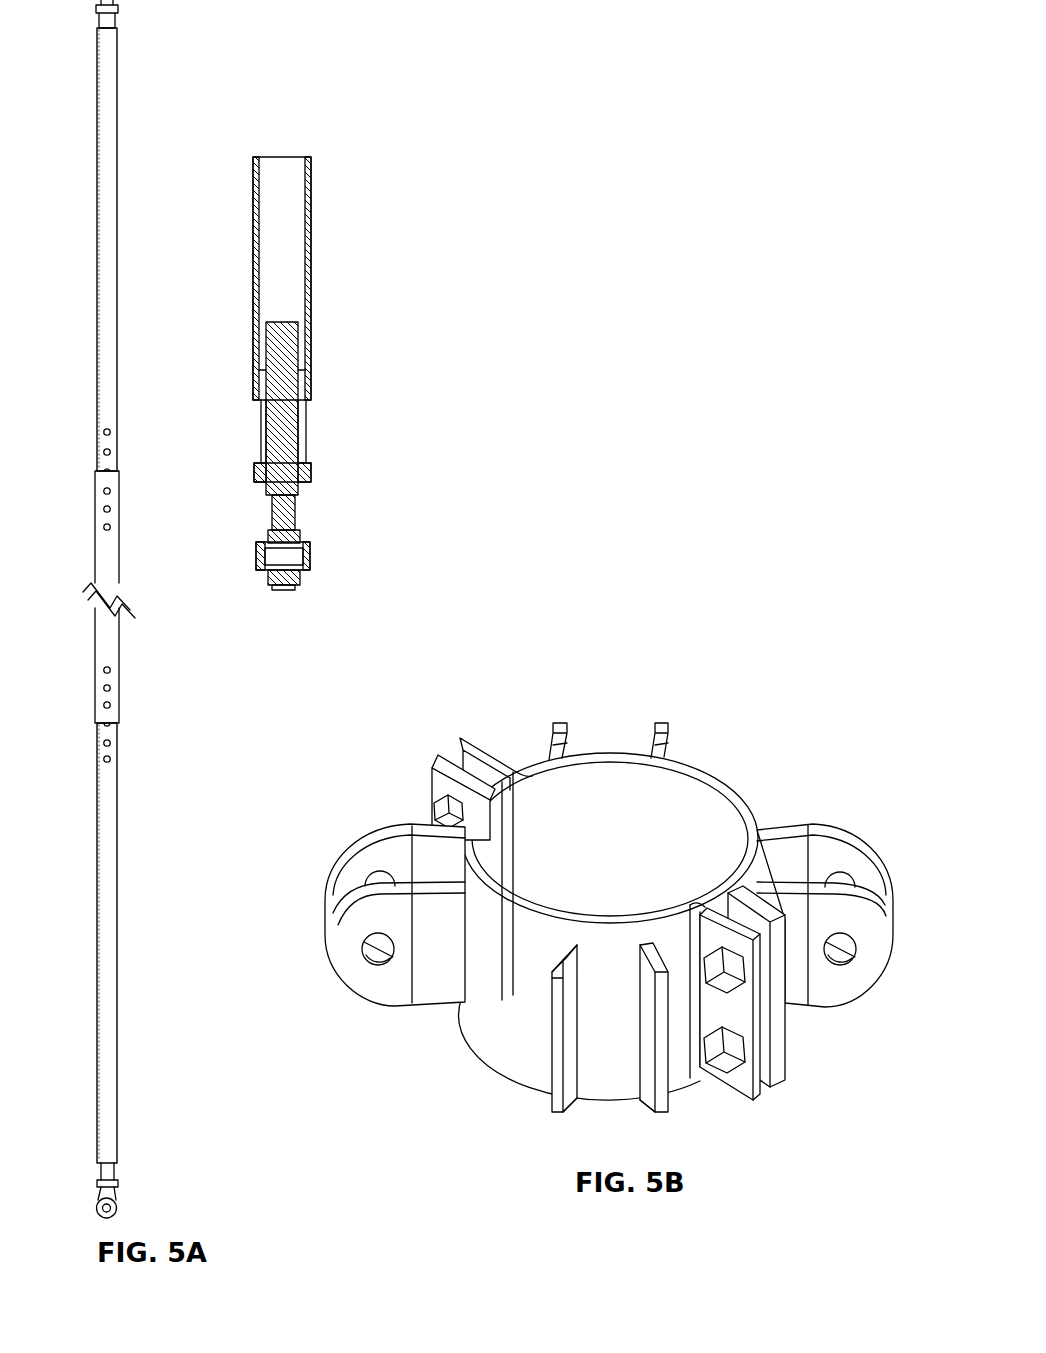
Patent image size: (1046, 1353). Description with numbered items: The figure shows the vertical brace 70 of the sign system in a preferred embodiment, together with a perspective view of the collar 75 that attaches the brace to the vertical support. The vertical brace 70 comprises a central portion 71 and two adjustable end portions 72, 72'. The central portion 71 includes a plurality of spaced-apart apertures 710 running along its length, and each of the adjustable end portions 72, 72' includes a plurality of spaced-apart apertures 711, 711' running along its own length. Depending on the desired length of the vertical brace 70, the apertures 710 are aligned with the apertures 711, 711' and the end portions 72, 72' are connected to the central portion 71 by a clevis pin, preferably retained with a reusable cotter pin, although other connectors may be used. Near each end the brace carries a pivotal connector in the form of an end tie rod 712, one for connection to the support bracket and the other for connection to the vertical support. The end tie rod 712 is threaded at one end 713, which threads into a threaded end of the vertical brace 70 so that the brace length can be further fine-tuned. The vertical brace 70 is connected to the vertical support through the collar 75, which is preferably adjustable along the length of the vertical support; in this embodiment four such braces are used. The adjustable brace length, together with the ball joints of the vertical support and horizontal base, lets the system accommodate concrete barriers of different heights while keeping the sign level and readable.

In FIG. 5A, the vertical brace 70 is at (86, 598).
In FIG. 5A, the central portion 71 is at (114, 561).
In FIG. 5A, the adjustable end portion 72 is at (245, 660).
In FIG. 5A, the adjustable end portion 72' is at (78, 249).
In FIG. 5A, the apertures 710 is at (91, 487).
In FIG. 5A, the apertures 711 is at (76, 742).
In FIG. 5A, the apertures 711' is at (147, 449).
In FIG. 5A, the end tie rod 712 is at (118, 1205).
In FIG. 5A, the threaded end 713 is at (100, 1171).
In FIG. 5B, the collar 75 is at (388, 768).